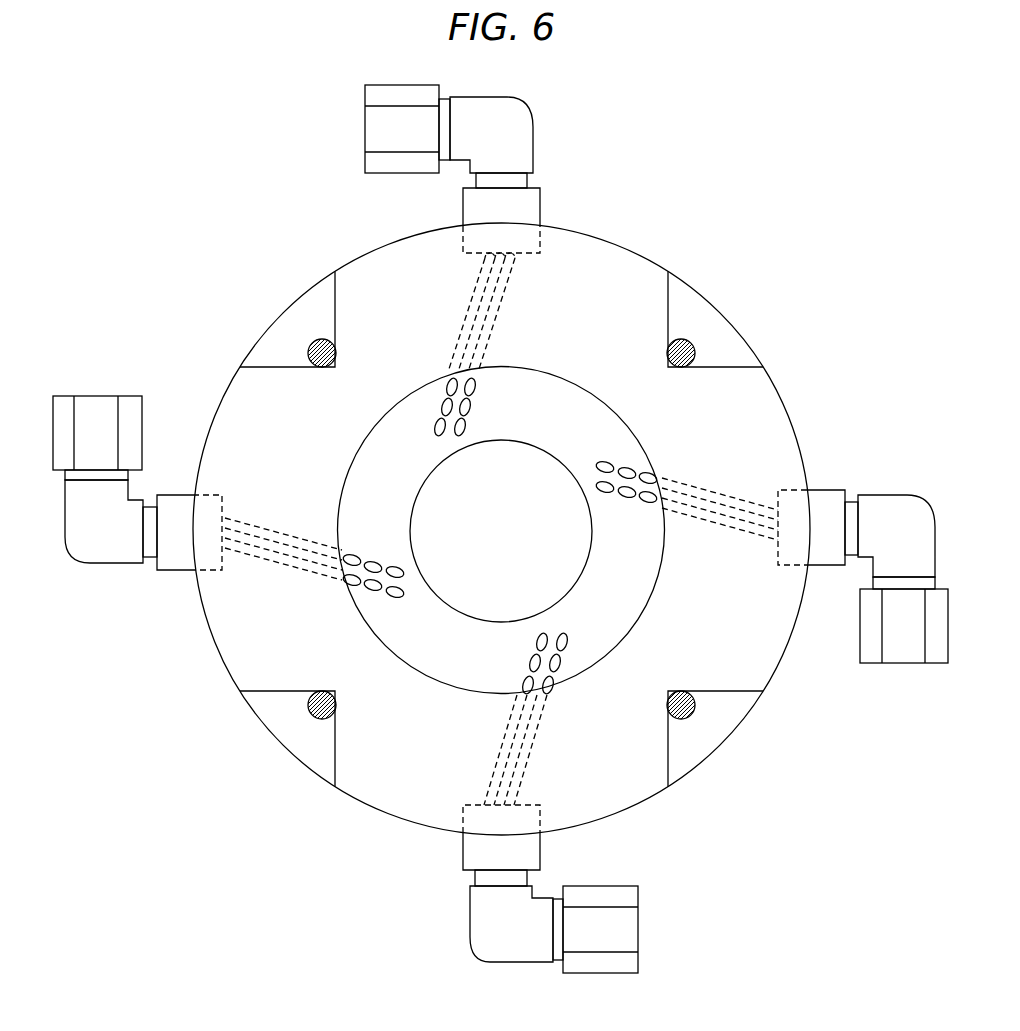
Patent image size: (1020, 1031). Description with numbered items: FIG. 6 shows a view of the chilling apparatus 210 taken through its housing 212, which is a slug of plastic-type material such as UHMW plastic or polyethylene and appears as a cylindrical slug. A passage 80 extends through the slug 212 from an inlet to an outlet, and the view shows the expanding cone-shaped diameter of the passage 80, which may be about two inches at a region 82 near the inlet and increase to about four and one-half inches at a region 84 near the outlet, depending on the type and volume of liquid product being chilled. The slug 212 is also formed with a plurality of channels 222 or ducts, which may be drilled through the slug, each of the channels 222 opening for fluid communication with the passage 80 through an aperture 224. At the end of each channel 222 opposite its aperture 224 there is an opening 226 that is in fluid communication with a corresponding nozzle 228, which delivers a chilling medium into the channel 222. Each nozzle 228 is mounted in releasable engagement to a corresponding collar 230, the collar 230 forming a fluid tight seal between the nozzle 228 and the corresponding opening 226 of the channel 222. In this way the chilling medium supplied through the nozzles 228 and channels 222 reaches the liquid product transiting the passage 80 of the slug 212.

The passage 80 is at (513, 543).
The region near the inlet 82 is at (530, 440).
The region near the outlet 84 is at (370, 433).
The apparatus 210 is at (764, 257).
The housing 212 is at (630, 250).
The channels 222 is at (500, 343).
The aperture 224 is at (397, 567).
The opening 226 is at (515, 257).
The nozzle 228 is at (535, 127).
The collar 230 is at (540, 210).